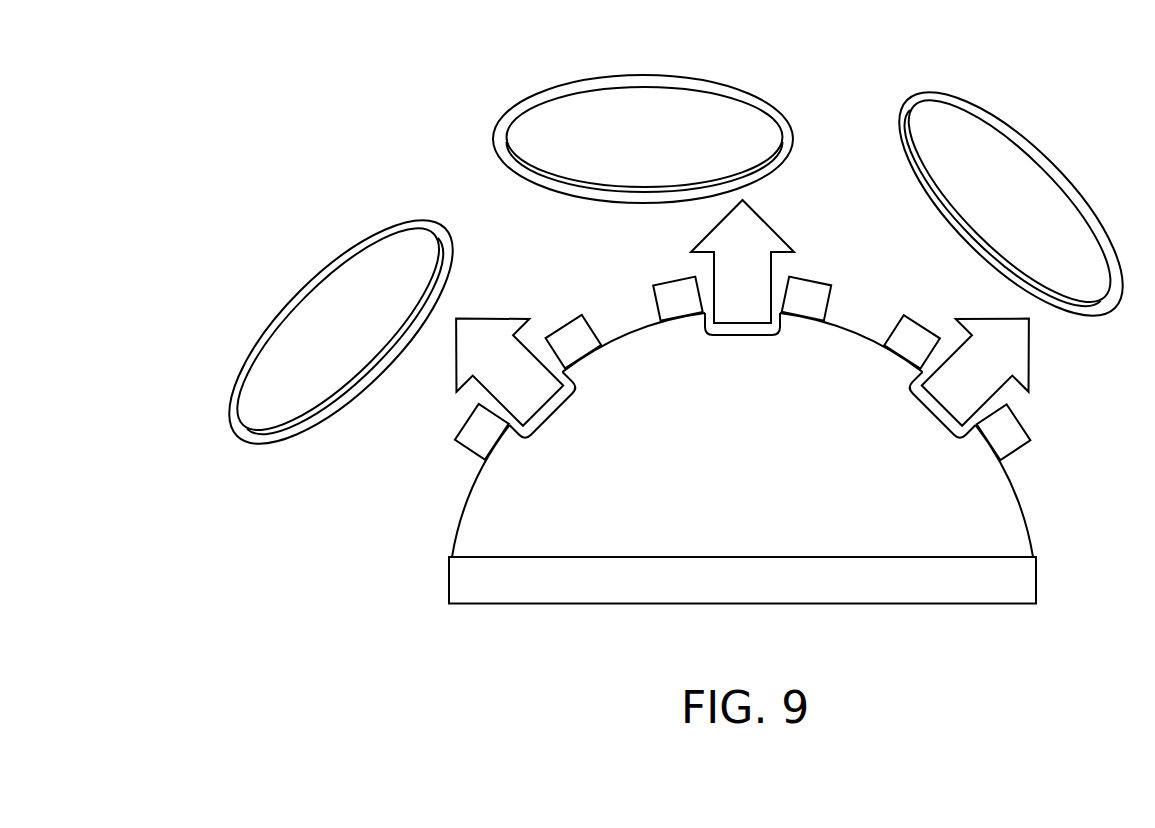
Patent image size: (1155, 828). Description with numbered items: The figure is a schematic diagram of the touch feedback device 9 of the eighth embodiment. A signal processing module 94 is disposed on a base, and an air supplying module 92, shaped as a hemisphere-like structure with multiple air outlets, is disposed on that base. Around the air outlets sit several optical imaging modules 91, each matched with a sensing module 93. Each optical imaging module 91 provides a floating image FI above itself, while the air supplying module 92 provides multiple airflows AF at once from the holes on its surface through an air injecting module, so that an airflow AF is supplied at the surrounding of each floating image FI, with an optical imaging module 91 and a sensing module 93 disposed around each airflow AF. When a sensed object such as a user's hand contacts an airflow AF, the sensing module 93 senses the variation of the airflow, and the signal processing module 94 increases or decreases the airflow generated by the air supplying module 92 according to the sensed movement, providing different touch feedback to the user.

The touch feedback device 9 is at (193, 43).
The optical imaging module 91 is at (463, 424).
The air supplying module 92 is at (1024, 516).
The sensing module 93 is at (592, 328).
The signal processing module 94 is at (1036, 580).
The airflow AF is at (769, 226).
The floating image FI is at (492, 140).